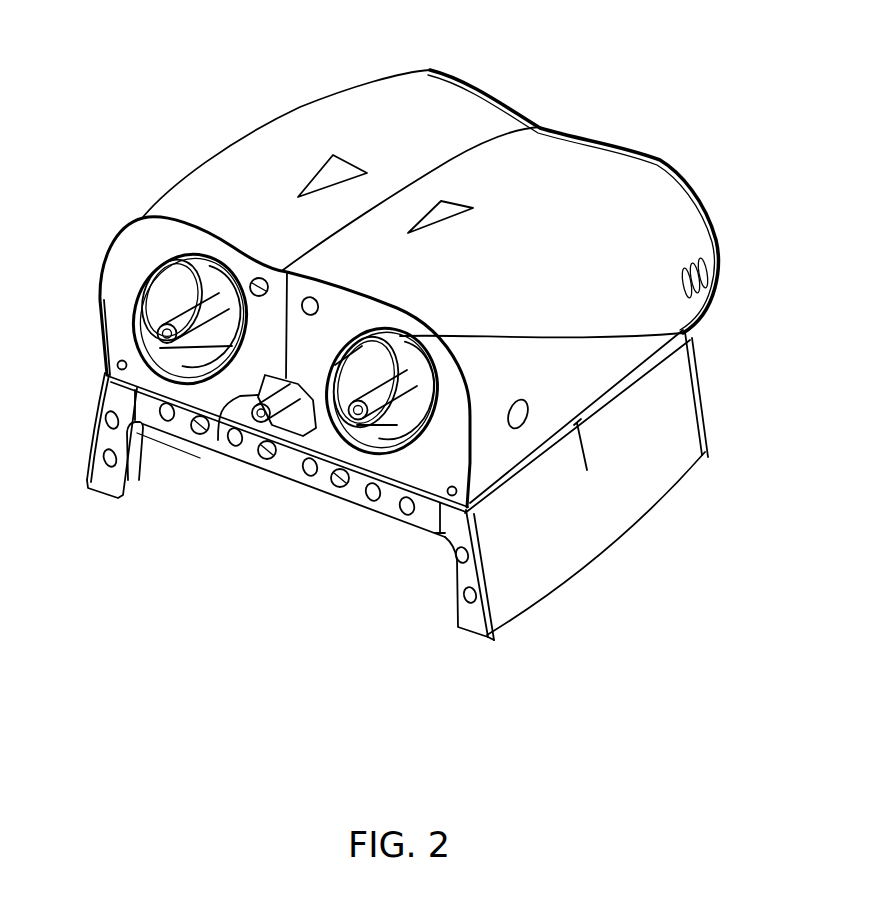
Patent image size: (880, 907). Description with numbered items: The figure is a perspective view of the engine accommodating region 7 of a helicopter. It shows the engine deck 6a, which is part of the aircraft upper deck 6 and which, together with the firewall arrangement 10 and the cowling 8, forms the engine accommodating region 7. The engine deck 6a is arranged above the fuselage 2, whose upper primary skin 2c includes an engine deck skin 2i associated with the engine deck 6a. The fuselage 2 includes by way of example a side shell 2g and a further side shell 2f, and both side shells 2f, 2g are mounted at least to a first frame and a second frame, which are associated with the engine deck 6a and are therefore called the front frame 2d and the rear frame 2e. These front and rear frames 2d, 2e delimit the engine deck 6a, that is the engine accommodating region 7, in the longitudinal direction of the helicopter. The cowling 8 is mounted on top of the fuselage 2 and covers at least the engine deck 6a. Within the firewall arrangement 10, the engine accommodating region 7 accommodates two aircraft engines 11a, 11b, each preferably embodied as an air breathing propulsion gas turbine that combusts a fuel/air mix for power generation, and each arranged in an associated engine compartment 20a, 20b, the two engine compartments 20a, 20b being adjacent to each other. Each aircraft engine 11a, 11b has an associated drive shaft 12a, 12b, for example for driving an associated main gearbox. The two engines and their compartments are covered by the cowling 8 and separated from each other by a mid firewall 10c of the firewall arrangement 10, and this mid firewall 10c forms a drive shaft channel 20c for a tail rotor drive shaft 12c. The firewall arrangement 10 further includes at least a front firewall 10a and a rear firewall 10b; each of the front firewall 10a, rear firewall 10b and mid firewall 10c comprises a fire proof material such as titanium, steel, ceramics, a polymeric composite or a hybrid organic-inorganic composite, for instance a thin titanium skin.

The fuselage 2 is at (662, 462).
The upper primary skin 2c is at (308, 430).
The front frame 2d is at (467, 580).
The rear frame 2e is at (702, 413).
The side shell 2f is at (142, 450).
The side shell 2g is at (532, 577).
The engine deck skin 2i is at (308, 430).
The aircraft upper deck 6 is at (732, 257).
The engine deck 6a is at (599, 60).
The engine accommodating region 7 is at (80, 387).
The cowling 8 is at (393, 92).
The firewall arrangement 10 is at (123, 233).
The front firewall 10a is at (157, 233).
The rear firewall 10b is at (693, 188).
The mid firewall 10c is at (683, 333).
The aircraft engine 11a is at (208, 293).
The aircraft engine 11b is at (414, 422).
The drive shaft 12a is at (163, 305).
The drive shaft 12b is at (352, 350).
The tail rotor drive shaft 12c is at (220, 427).
The engine compartment 20a is at (195, 365).
The engine compartment 20b is at (395, 441).
The drive shaft channel 20c is at (290, 437).